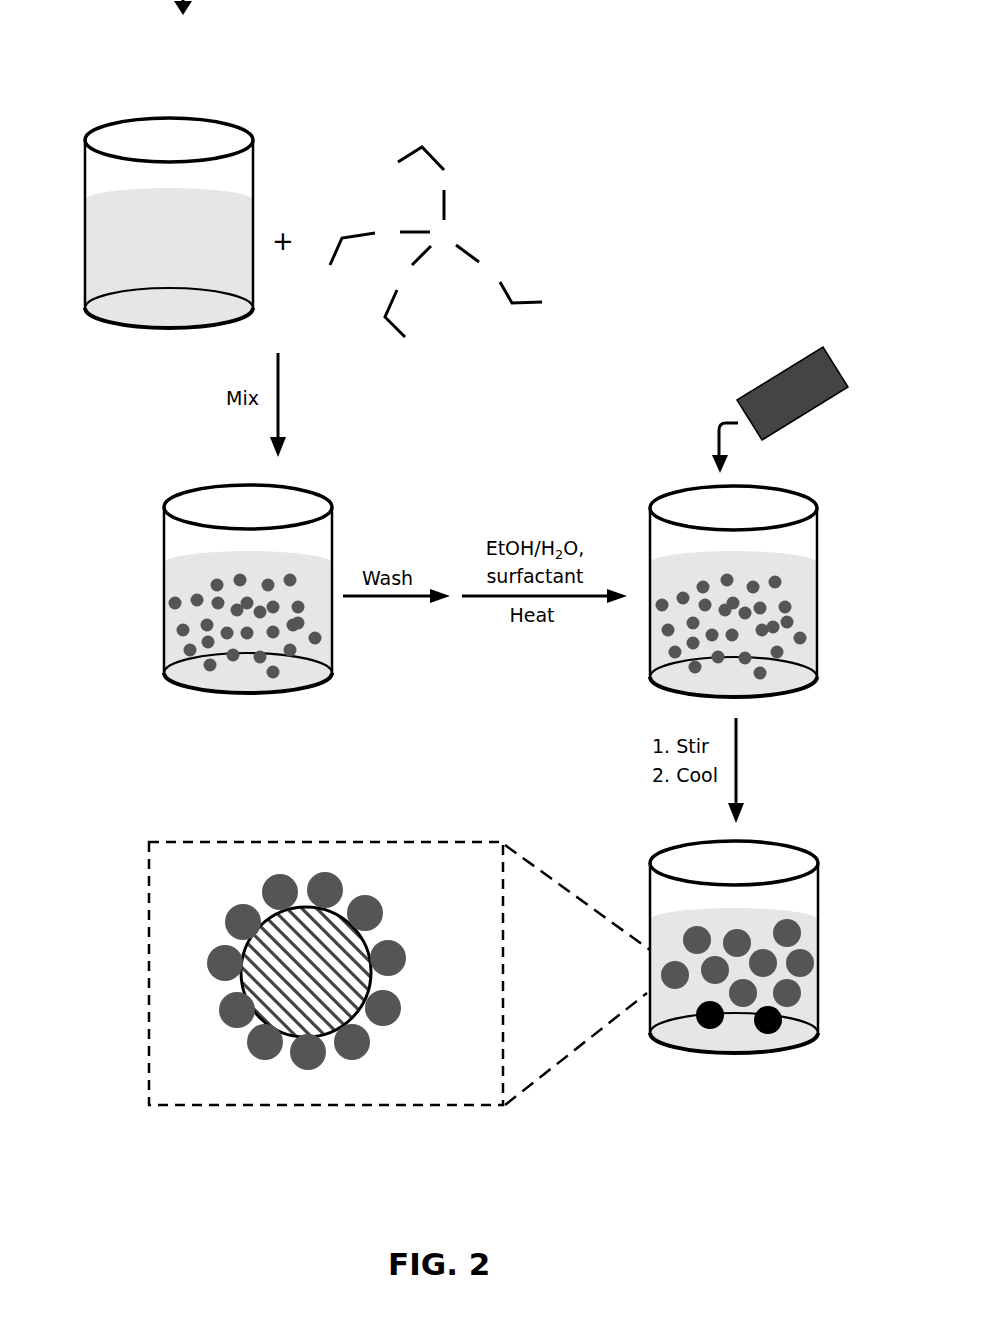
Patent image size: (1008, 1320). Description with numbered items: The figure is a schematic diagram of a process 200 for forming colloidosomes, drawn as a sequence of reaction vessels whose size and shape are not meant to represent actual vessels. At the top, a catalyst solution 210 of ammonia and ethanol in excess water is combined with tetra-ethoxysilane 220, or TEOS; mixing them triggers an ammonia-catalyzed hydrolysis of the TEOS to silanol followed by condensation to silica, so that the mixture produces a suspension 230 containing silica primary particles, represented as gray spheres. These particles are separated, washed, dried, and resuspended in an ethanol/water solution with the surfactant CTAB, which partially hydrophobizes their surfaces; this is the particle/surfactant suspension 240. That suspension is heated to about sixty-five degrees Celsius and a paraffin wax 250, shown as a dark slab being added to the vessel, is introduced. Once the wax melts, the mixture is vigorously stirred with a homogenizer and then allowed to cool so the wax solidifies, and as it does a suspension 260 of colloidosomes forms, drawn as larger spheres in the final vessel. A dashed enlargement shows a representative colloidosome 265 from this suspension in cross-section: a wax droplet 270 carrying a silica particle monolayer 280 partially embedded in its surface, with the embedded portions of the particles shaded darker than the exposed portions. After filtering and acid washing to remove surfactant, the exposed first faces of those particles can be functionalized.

The process of forming colloidosomes 200 is at (150, 0).
The catalyst solution 210 is at (84, 267).
The tetra-ethoxysilane (TEOS) 220 is at (468, 328).
The suspension 230 is at (164, 651).
The particle/surfactant suspension 240 is at (817, 616).
The paraffin wax 250 is at (845, 424).
The suspension of colloidosomes 260 is at (818, 991).
The colloidosome 265 is at (223, 1093).
The wax droplet 270 is at (377, 937).
The silica particle monolayer 280 is at (428, 1004).